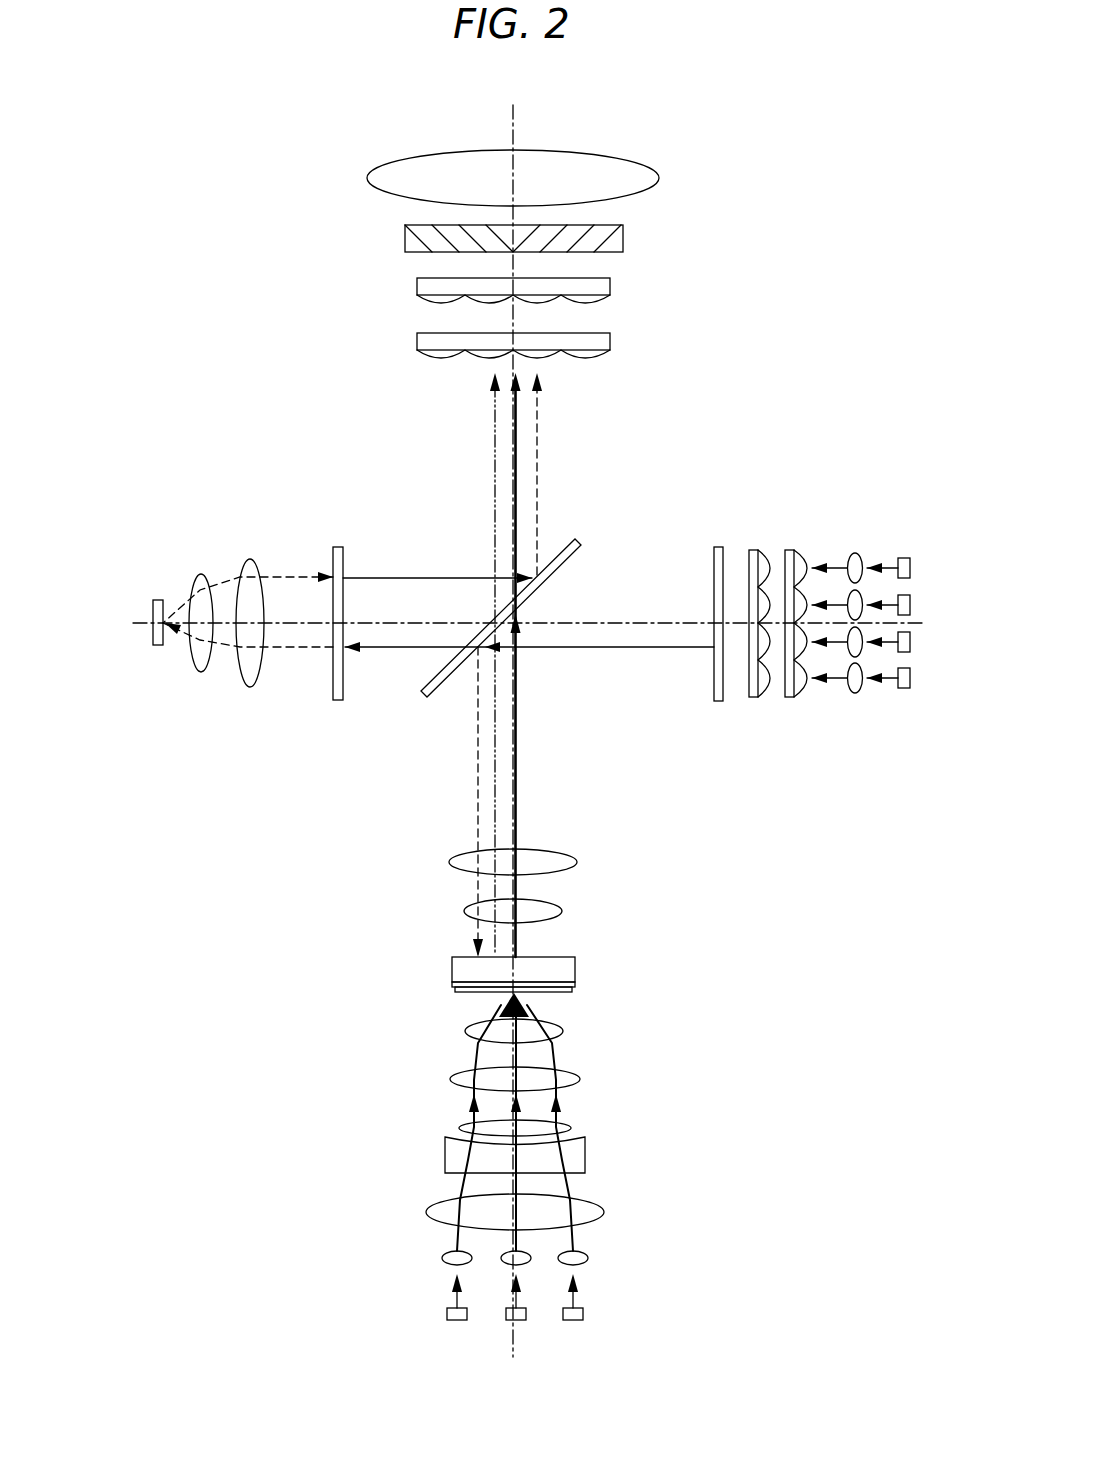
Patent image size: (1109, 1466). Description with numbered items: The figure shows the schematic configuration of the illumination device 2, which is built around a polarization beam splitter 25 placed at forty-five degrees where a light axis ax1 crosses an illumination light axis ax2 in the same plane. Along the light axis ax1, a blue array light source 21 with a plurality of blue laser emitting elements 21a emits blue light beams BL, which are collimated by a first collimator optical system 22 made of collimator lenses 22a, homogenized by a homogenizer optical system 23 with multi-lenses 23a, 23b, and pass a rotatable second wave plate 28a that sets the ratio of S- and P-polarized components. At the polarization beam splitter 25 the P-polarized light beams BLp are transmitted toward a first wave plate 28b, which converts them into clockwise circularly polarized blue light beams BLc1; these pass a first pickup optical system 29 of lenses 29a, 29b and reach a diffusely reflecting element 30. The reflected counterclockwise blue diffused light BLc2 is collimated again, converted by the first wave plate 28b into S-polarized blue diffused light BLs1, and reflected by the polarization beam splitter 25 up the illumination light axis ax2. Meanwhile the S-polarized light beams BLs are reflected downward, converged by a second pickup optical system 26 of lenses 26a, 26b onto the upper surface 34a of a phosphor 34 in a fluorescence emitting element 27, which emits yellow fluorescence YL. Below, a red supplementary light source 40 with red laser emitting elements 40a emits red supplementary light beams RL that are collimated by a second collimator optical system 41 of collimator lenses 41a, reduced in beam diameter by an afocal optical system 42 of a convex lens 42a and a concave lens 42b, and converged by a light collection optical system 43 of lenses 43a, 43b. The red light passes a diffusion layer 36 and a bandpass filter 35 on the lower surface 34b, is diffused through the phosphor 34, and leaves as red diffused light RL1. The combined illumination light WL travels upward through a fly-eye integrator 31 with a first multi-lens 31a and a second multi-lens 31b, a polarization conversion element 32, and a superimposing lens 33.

The illumination device 2 is at (858, 143).
The illumination light axis ax2 is at (513, 115).
The light axis ax1 is at (147, 624).
The superimposing lens 33 is at (632, 162).
The polarization conversion element 32 is at (623, 243).
The fly-eye integrator 31 is at (720, 260).
The first multi-lens 31a is at (610, 342).
The second multi-lens 31b is at (610, 287).
The illumination light WL is at (482, 418).
The red diffused light RL1 is at (495, 450).
The yellow fluorescence YL is at (517, 470).
The polarization beam splitter 25 is at (446, 697).
The blue diffused light BLs1 is at (383, 575).
The light beams BLp is at (383, 650).
The light beams BLs is at (478, 790).
The first wave plate 28b is at (338, 547).
The blue diffused light BLc2 is at (277, 573).
The blue light beam BLc1 is at (297, 650).
The diffusely reflecting element 30 is at (157, 600).
The first pickup optical system 29 is at (272, 753).
The lens 29a is at (250, 686).
The lens 29b is at (200, 670).
The second wave plate 28a is at (718, 547).
The homogenizer optical system 23 is at (842, 767).
The multi-lens 23a is at (805, 690).
The multi-lens 23b is at (768, 697).
The first collimator optical system 22 is at (853, 542).
The collimator lens 22a is at (852, 692).
The blue array light source 21 is at (907, 547).
The blue laser emitting element 21a is at (903, 690).
The blue light beam BL is at (883, 563).
The second pickup optical system 26 is at (663, 822).
The lens 26a is at (555, 850).
The lens 26b is at (545, 900).
The fluorescence emitting element 27 is at (600, 933).
The phosphor 34 is at (575, 967).
The upper surface 34a is at (452, 957).
The lower surface 34b is at (458, 990).
The bandpass filter 35 is at (575, 985).
The diffusion layer 36 is at (570, 993).
The light collection optical system 43 is at (695, 1022).
The lens 43a is at (575, 1078).
The lens 43b is at (560, 1032).
The red supplementary light beam RL is at (467, 1128).
The afocal optical system 42 is at (695, 1145).
The convex lens 42a is at (603, 1205).
The concave lens 42b is at (585, 1155).
The second collimator optical system 41 is at (595, 1258).
The collimator lens 41a is at (442, 1258).
The red supplementary light source 40 is at (595, 1315).
The red laser emitting element 40a is at (447, 1314).